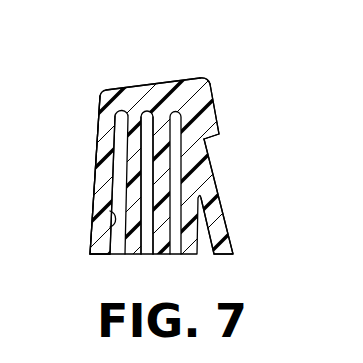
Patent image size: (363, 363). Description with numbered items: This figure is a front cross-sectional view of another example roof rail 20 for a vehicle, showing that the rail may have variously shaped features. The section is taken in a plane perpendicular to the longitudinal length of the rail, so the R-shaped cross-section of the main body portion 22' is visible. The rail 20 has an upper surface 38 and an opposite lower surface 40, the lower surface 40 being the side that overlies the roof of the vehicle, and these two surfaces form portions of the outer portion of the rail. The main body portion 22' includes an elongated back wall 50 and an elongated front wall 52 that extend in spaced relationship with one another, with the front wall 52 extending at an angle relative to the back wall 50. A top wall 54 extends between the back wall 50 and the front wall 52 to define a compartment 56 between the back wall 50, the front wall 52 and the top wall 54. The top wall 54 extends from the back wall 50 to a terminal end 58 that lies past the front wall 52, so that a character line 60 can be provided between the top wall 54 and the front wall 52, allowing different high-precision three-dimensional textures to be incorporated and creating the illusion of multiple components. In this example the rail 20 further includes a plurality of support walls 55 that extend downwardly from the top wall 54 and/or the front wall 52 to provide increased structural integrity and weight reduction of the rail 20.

The roof rail 20 is at (258, 91).
The main body portion 22' is at (70, 161).
The upper surface 38 is at (132, 87).
The lower surface 40 is at (92, 255).
The back wall 50 is at (97, 174).
The front wall 52 is at (212, 170).
The top wall 54 is at (157, 91).
The support walls 55 is at (118, 256).
The compartment 56 is at (93, 213).
The terminal end 58 is at (209, 90).
The character line 60 is at (219, 136).